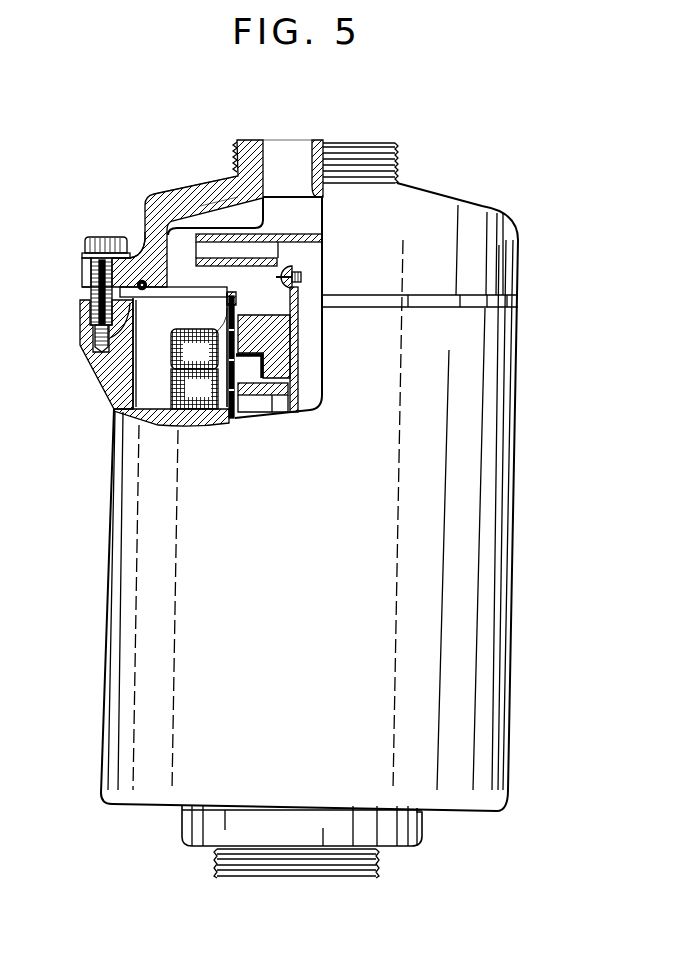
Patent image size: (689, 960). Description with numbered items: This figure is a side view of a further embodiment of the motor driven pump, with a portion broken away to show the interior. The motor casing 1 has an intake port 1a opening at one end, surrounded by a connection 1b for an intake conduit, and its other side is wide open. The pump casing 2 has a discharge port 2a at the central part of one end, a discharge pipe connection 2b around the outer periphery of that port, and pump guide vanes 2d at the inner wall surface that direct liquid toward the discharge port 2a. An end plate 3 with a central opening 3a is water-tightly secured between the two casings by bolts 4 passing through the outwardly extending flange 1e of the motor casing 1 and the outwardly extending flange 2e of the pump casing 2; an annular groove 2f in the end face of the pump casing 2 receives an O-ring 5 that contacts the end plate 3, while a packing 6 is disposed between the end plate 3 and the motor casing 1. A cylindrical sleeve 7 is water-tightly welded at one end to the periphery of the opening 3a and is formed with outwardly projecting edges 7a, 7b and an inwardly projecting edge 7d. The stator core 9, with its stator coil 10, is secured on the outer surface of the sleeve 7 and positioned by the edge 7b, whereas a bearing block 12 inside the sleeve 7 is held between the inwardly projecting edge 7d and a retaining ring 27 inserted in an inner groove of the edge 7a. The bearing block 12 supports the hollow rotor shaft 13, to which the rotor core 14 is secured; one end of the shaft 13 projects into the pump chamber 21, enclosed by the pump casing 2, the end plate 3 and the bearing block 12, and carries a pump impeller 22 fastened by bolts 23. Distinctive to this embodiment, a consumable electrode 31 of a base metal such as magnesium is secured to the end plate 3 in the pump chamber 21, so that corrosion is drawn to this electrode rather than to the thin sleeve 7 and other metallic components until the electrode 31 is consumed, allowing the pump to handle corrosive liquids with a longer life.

The motor casing 1 is at (115, 558).
The intake port 1a is at (265, 880).
The connection for an intake conduit 1b is at (218, 861).
The outwardly extending flange of the motor casing 1e is at (85, 305).
The pump casing 2 is at (247, 148).
The discharge port 2a is at (299, 150).
The discharge pipe connection 2b is at (381, 155).
The pump guide vanes 2d is at (228, 215).
The outwardly extending flange of the pump casing 2e is at (90, 270).
The annular groove 2f is at (143, 256).
The end plate 3 is at (191, 329).
The opening 3a is at (231, 300).
The bolts 4 is at (92, 240).
The O-ring 5 is at (145, 280).
The packing 6 is at (110, 337).
The cylindrical sleeve 7 is at (228, 420).
The outwardly projecting edge 7a is at (194, 349).
The outwardly projecting edge 7b is at (194, 389).
The inwardly projecting edge 7d is at (266, 366).
The stator core 9 is at (178, 415).
The stator coil 10 is at (175, 377).
The bearing block 12 is at (296, 353).
The hollow rotor shaft 13 is at (299, 321).
The rotor core 14 is at (244, 413).
The pump chamber 21 is at (183, 230).
The pump impeller 22 is at (308, 257).
The bolts 23 is at (303, 278).
The retaining ring 27 is at (264, 346).
The consumable electrode 31 is at (181, 297).